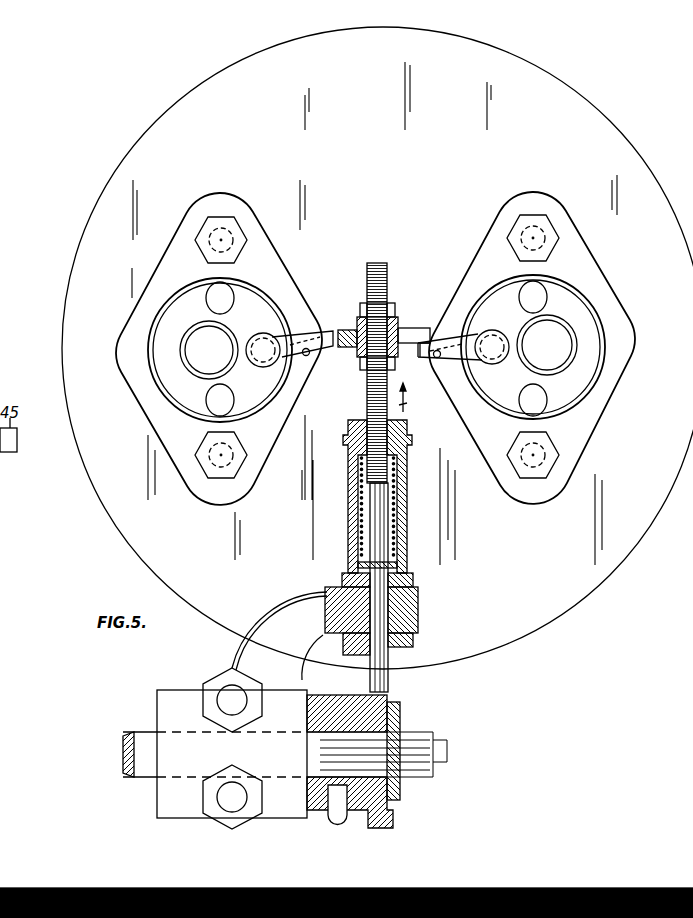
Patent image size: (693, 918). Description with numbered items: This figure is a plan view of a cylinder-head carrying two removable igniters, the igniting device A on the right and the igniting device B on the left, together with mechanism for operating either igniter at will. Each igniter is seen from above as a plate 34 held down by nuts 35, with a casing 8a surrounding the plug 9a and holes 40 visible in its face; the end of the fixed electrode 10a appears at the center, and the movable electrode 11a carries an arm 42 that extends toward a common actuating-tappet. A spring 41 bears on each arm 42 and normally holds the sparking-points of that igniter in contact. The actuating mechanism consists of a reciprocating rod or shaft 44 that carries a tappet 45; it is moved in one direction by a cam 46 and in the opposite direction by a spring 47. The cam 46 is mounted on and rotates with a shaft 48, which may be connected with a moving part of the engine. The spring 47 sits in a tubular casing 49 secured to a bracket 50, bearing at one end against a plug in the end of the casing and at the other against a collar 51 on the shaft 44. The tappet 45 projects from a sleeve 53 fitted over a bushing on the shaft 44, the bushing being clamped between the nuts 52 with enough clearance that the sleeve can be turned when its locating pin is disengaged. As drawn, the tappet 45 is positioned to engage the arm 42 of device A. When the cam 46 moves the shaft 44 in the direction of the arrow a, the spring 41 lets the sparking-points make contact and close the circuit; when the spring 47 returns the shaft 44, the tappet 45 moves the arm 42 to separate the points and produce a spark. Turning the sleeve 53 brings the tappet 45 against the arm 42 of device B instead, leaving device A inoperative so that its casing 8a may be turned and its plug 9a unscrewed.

The diamond-shaped mounting plate 34 is at (375, 348).
The nuts 35 is at (219, 219).
The casing 8a is at (200, 411).
The plug 9a is at (376, 348).
The fixed electrode 10a is at (378, 347).
The holes 40 is at (210, 302).
The movable electrode 11a is at (262, 358).
The arm 42 is at (306, 340).
The spring 41 is at (305, 356).
The shaft 44 is at (367, 410).
The tappet 45 is at (412, 328).
The nuts 52 is at (362, 307).
The sleeve 53 is at (398, 348).
The spring 47 is at (352, 513).
The tubular casing 49 is at (400, 520).
The collar 51 is at (354, 564).
The bracket 50 is at (279, 636).
The shaft 48 is at (134, 731).
The cam 46 is at (393, 817).
The arrow a is at (408, 397).
The igniting device A is at (634, 341).
The igniting device B is at (121, 356).